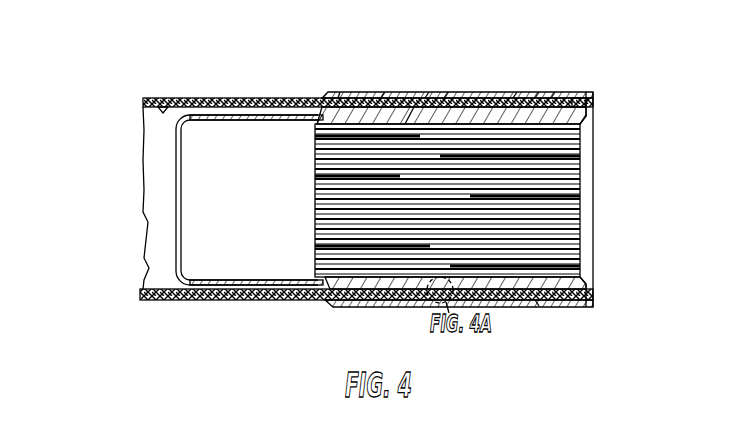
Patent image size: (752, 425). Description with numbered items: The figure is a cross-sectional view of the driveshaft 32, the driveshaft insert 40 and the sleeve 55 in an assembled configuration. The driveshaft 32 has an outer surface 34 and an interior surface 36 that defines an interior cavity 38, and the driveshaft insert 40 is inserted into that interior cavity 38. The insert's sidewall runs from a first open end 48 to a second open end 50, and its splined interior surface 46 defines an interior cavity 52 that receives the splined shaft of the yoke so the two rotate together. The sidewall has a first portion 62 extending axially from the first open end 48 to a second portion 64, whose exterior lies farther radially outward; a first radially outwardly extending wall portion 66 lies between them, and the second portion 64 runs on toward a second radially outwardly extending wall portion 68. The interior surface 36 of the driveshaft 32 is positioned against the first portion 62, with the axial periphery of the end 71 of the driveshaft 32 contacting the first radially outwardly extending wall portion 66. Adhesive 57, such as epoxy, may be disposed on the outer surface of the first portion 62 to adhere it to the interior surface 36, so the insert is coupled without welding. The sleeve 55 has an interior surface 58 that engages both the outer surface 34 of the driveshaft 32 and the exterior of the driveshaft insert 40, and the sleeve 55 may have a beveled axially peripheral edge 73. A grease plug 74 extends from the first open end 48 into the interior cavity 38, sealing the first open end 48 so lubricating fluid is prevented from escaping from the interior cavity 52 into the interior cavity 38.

The driveshaft 32 is at (383, 95).
The outer surface 34 is at (360, 95).
The interior surface 36 is at (159, 98).
The interior cavity 38 is at (157, 142).
The driveshaft insert 40 is at (580, 110).
The splined interior surface 46 is at (487, 200).
The first open end 48 is at (329, 93).
The second open end 50 is at (595, 266).
The interior cavity 52 is at (568, 212).
The sleeve 55 is at (446, 95).
The adhesive 57 is at (430, 305).
The interior surface 58 is at (427, 95).
The first portion 62 is at (410, 115).
The second portion 64 is at (553, 97).
The first radially outwardly extending wall portion 66 is at (537, 98).
The second radially outwardly extending wall portion 68 is at (579, 97).
The end 71 is at (515, 98).
The beveled axially peripheral edge 73 is at (338, 93).
The grease plug 74 is at (177, 182).